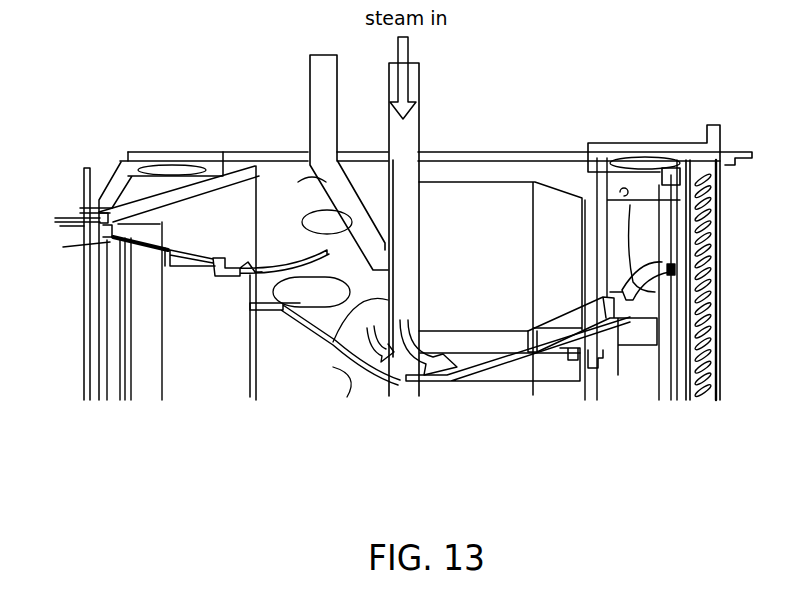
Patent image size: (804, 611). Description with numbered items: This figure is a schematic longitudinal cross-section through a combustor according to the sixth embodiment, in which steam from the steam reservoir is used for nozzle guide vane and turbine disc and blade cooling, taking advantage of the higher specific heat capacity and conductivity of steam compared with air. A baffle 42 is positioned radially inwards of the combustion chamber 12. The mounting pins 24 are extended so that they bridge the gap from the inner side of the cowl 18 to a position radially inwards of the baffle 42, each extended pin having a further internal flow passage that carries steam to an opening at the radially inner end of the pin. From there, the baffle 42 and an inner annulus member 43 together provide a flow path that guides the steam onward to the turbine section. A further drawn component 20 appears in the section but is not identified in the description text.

The mounting pin 24 is at (419, 102).
The combustion chamber 12 is at (500, 200).
The cowl 18 is at (390, 298).
The inner annulus member 43 is at (477, 381).
The channel bracket 20 is at (528, 333).
The baffle 42 is at (592, 333).